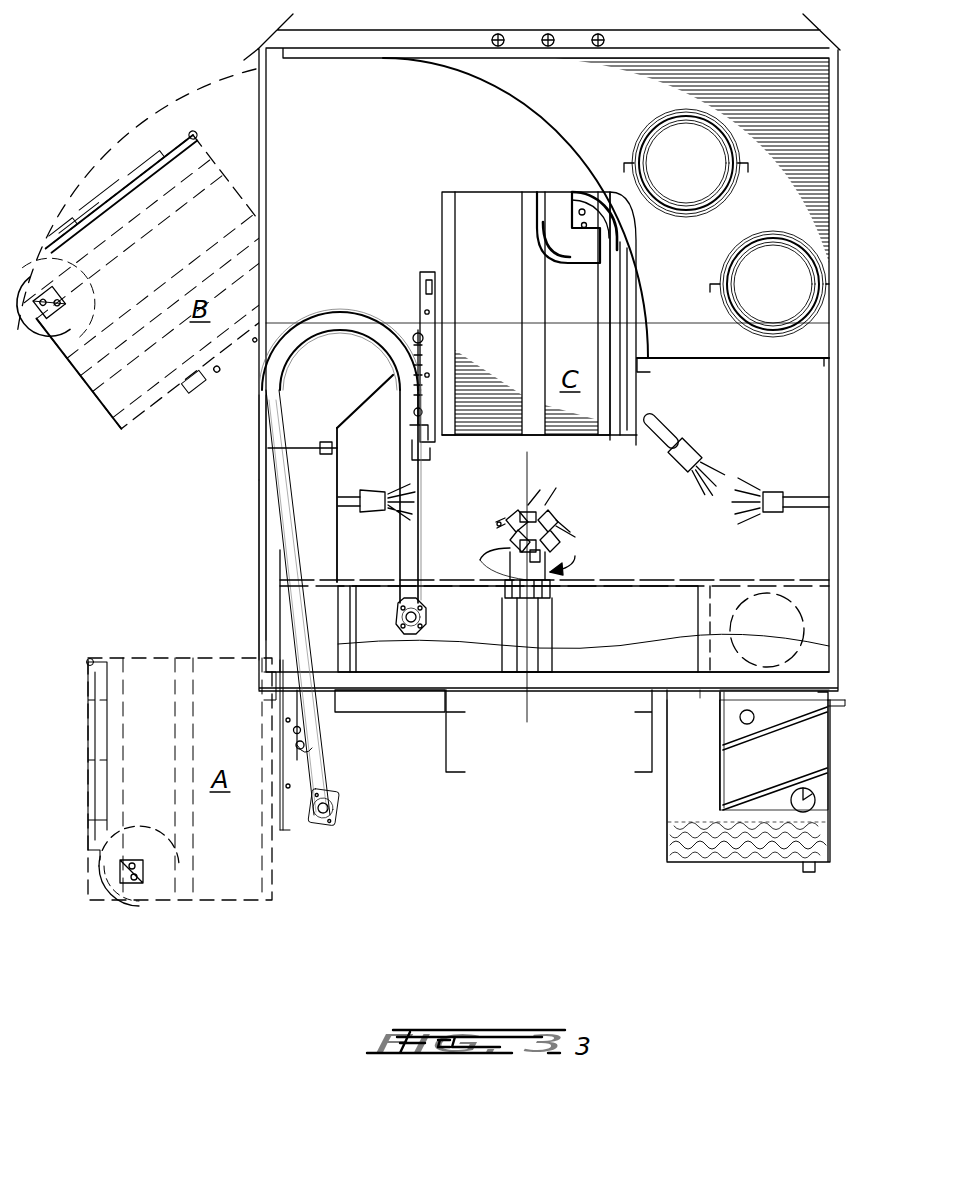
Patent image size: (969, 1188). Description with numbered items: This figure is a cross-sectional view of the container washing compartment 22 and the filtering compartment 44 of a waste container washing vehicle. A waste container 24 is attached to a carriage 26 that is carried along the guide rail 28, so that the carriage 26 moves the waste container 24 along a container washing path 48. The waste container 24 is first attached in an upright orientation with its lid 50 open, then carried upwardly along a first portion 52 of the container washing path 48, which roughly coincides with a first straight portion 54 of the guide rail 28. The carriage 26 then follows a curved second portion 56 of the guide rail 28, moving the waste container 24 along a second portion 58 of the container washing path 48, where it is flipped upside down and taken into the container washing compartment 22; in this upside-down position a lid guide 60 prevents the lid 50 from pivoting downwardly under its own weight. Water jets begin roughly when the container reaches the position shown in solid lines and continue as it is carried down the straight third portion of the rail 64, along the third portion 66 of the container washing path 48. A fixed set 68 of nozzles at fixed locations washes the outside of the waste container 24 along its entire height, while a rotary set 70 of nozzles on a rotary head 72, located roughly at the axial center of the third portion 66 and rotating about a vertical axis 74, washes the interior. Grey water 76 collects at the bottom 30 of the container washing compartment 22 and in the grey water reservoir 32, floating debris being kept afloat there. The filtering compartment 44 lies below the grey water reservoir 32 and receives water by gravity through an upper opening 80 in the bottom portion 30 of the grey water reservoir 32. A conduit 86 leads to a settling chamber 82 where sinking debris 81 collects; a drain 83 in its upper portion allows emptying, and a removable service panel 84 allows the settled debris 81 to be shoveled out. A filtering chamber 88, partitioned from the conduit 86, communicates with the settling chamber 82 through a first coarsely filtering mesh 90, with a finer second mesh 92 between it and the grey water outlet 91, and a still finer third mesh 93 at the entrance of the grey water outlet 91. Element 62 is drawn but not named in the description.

The container washing compartment 22 is at (443, 163).
The waste container 24 is at (469, 299).
The carriage 26 is at (420, 270).
The guide rail 28 is at (254, 440).
The bottom of the container washing compartment 30 is at (430, 673).
The grey water reservoir 32 is at (445, 628).
The filtering compartment 44 is at (665, 798).
The container washing path 48 is at (153, 117).
The lid 50 is at (634, 366).
The first portion of the container washing path 52 is at (110, 545).
The first straight portion of the guide rail 54 is at (292, 564).
The curved second portion of the guide rail 56 is at (347, 326).
The second portion of the container washing path 58 is at (293, 156).
The lid guide 60 is at (570, 108).
The drive sprocket 62 is at (383, 636).
The straight third portion of the rail 64 is at (406, 468).
The third portion of the container washing path 66 is at (455, 475).
The fixed set of washing nozzles 68 is at (708, 426).
The rotary set of washing nozzles 70 is at (568, 518).
The rotary head 72 is at (512, 548).
The vertical axis 74 is at (530, 699).
The grey water 76 is at (593, 623).
The upper opening 80 is at (652, 690).
The sinking debris 81 is at (722, 843).
The settling chamber 82 is at (668, 846).
The drain 83 is at (808, 794).
The service panel 84 is at (832, 820).
The conduit 86 is at (675, 768).
The filtering chamber 88 is at (853, 698).
The first coarsely filtering mesh 90 is at (762, 796).
The grey water outlet 91 is at (753, 713).
The second mesh 92 is at (738, 737).
The third mesh 93 is at (828, 701).